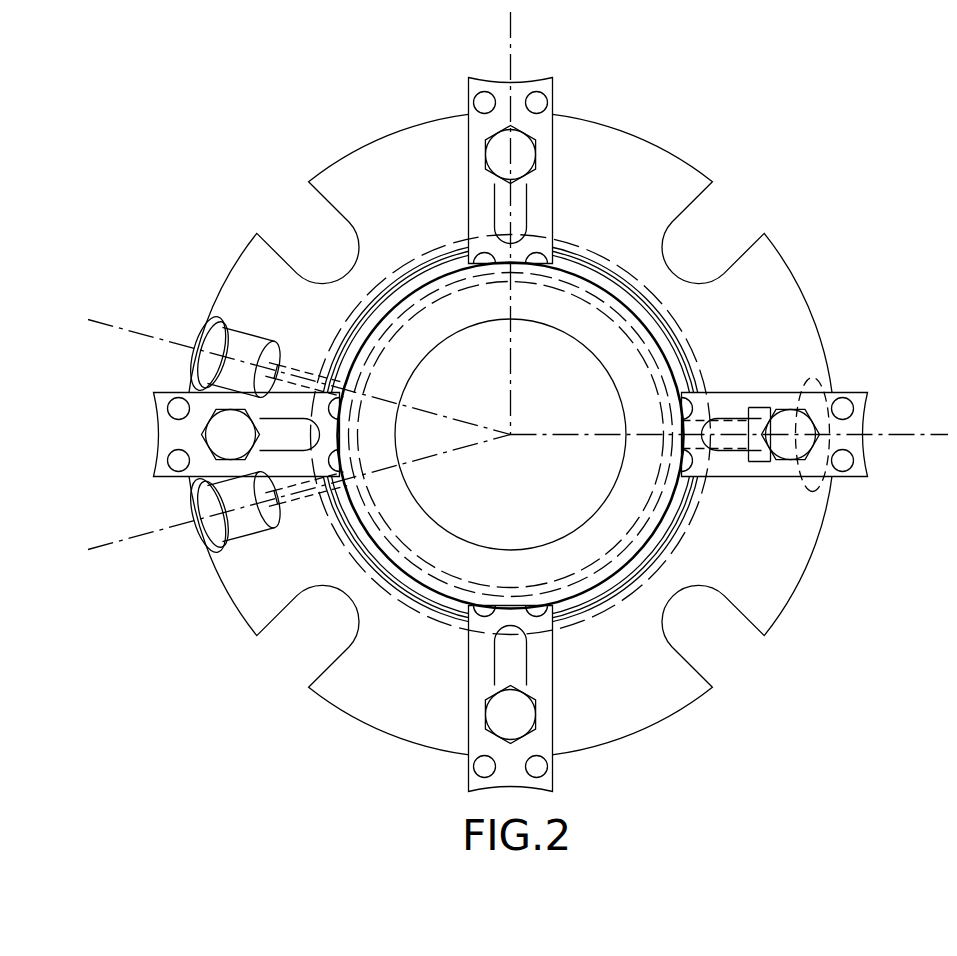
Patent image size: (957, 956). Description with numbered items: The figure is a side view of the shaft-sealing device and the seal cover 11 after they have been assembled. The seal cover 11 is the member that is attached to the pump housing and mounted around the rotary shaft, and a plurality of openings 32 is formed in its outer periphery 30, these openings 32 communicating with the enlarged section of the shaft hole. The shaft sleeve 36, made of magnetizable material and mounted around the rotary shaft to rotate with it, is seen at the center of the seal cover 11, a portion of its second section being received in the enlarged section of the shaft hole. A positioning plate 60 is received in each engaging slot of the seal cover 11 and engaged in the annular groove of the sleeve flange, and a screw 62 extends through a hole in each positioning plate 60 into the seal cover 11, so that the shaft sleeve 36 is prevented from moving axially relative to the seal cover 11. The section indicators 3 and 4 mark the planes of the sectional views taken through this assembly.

The seal cover 11 is at (673, 185).
The outer periphery 30 is at (226, 593).
The openings 32 is at (196, 528).
The shaft sleeve 36 is at (673, 492).
The positioning plate 60 is at (862, 470).
The screw 62 is at (798, 423).
The section line 3- 3 is at (931, 405).
The section line 4- 4 is at (486, 31).